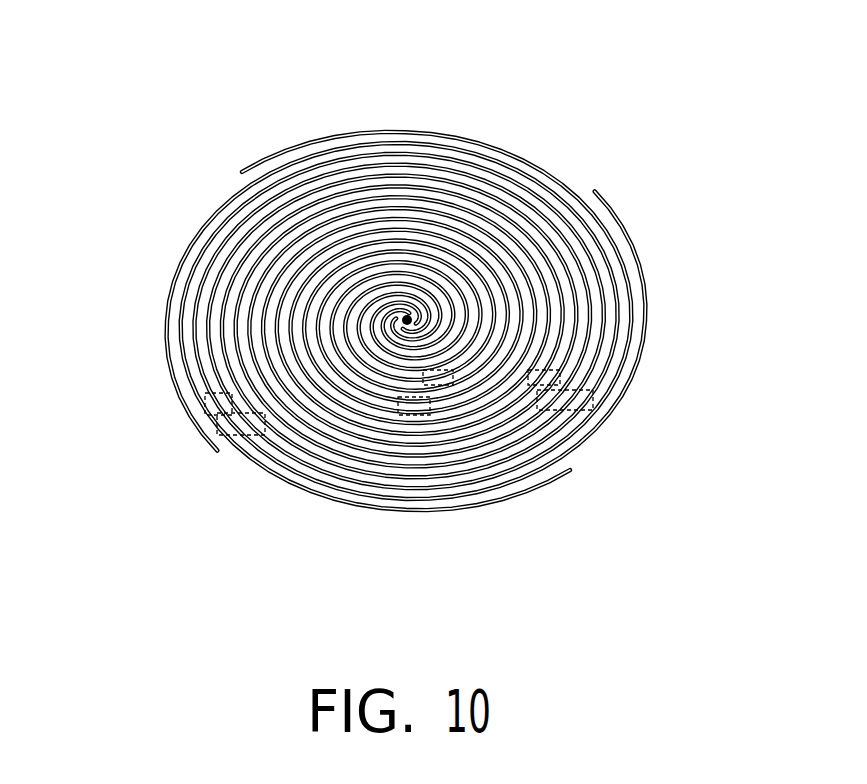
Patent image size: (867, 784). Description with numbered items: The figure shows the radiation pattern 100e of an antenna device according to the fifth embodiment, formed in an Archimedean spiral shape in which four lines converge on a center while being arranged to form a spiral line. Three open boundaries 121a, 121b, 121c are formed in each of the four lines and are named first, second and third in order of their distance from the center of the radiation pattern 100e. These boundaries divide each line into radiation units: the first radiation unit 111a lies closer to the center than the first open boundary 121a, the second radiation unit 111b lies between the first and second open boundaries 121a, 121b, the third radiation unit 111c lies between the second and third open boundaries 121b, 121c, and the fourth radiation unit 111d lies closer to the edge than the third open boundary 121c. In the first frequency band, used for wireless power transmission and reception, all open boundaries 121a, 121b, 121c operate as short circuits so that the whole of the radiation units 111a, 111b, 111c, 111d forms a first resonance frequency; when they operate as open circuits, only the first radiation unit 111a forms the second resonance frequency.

The radiation pattern 100e is at (560, 72).
The first radiation unit 111a is at (363, 287).
The second radiation unit 111b is at (330, 420).
The third radiation unit 111c is at (197, 313).
The fourth radiation unit 111d is at (650, 303).
The first open boundary 121a is at (455, 388).
The second open boundary 121b is at (585, 412).
The third open boundary 121c is at (232, 437).